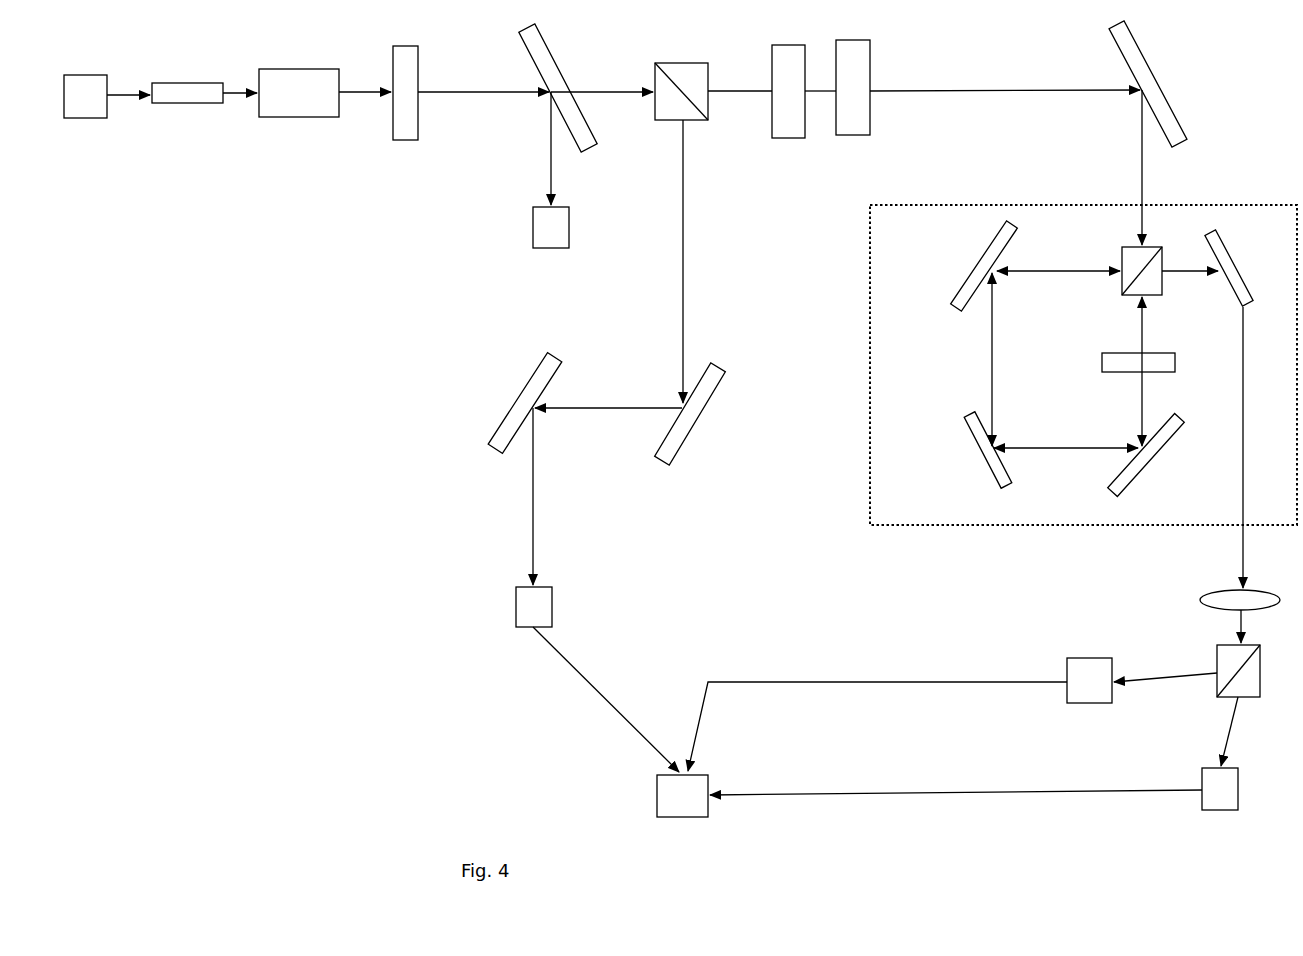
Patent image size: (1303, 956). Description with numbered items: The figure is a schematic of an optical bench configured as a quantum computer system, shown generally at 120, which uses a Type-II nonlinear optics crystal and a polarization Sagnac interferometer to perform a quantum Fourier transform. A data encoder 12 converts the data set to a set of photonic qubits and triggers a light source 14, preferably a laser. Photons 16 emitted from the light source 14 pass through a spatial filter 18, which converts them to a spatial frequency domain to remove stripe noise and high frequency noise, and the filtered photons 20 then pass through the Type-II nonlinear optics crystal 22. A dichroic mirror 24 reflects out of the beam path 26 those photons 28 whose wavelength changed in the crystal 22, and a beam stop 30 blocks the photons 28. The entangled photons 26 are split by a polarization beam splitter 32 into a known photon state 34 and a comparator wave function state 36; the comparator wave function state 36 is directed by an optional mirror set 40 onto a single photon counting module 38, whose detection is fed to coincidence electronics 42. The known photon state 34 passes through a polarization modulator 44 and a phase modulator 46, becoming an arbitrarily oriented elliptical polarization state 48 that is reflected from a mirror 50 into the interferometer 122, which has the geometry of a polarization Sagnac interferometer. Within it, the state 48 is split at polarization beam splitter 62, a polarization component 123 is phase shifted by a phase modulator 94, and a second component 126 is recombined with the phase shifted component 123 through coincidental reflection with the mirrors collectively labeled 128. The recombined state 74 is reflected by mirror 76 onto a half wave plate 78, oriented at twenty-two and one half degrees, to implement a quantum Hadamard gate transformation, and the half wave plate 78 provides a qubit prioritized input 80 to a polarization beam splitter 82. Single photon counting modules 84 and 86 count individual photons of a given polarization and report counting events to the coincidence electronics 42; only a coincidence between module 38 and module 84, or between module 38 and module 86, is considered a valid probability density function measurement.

The data encoder 12 is at (85, 96).
The light source 14 is at (165, 93).
The photons 16 is at (240, 95).
The spatial filter 18 is at (299, 93).
The photons 20 is at (372, 95).
The Type-II nonlinear optics crystal 22 is at (405, 93).
The dichroic mirror 24 is at (507, 88).
The entangled photons 26 is at (608, 92).
The photons 28 is at (555, 150).
The beam stop 30 is at (551, 227).
The polarization beam splitter 32 is at (681, 81).
The known photon state 34 is at (740, 92).
The comparator wave function state 36 is at (682, 283).
The single photon counting module 38 is at (534, 517).
The mirror set 40 is at (520, 413).
The coincidence electronics 42 is at (867, 722).
The polarization modulator 44 is at (804, 91).
The phase modulator 46 is at (853, 87).
The arbitrarily oriented elliptical polarization state 48 is at (980, 91).
The mirror 50 is at (1157, 102).
The polarization beam splitter 62 is at (1142, 271).
The recombined state 74 is at (1175, 268).
The mirror 76 is at (1207, 260).
The half wave plate 78 is at (1218, 604).
The qubit prioritized input 80 is at (1237, 620).
The polarization beam splitter 82 is at (1238, 671).
The single photon counting module 84 is at (1142, 680).
The single photon counting module 86 is at (1220, 753).
The phase modulator 94 is at (1105, 370).
The system 120 is at (348, 352).
The interferometer 122 is at (868, 282).
The polarization component 123 is at (1143, 338).
The second component 126 is at (1055, 270).
The mirrors 128 is at (988, 248).